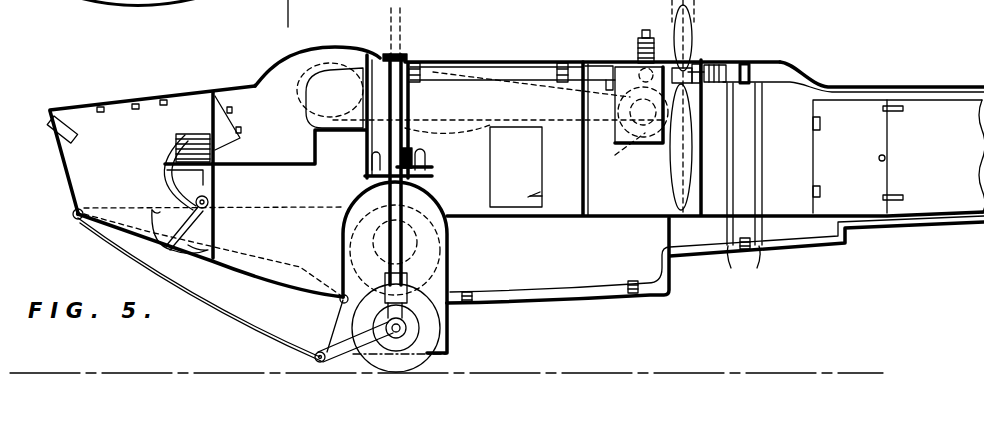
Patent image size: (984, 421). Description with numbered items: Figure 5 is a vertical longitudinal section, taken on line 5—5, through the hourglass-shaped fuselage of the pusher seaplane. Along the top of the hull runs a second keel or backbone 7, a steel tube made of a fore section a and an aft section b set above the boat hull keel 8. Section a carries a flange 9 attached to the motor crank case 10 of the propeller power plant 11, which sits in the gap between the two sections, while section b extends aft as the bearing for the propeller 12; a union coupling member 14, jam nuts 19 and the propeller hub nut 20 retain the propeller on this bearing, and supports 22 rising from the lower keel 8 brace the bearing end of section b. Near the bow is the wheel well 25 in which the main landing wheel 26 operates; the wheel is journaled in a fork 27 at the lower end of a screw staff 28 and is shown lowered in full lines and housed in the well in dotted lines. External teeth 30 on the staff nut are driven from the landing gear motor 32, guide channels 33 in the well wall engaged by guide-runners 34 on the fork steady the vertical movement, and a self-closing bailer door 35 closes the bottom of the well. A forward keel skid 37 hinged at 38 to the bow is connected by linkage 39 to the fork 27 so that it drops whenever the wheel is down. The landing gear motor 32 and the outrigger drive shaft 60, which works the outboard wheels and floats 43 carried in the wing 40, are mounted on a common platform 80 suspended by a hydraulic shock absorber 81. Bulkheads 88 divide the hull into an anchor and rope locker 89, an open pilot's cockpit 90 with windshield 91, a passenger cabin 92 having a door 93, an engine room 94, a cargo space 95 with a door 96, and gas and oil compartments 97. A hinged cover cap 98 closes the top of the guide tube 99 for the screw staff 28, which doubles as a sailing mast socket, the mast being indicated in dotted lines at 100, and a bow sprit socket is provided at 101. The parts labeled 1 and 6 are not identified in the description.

The box indicator 1 is at (519, 193).
The bottom plate 5 is at (527, 291).
The support column 6 is at (285, 22).
The backbone 7 is at (498, 73).
The boat hull keel 8 is at (628, 296).
The flange 9 is at (612, 80).
The motor crank case 10 is at (626, 89).
The propeller power plant 11 is at (641, 47).
The propeller 12 is at (680, 28).
The union coupling member 14 is at (708, 68).
The jam nuts 19 is at (727, 83).
The propeller hub nut 20 is at (692, 62).
The supports 22 is at (744, 186).
The wheel well 25 is at (203, 0).
The main landing wheel 26 is at (145, 3).
The fork 27 is at (336, 302).
The screw staff 28 is at (420, 203).
The external teeth 30 is at (390, 172).
The landing gear motor 32 is at (404, 150).
The guide channels 33 is at (405, 252).
The guide-runners 34 is at (410, 285).
The bailer door 35 is at (448, 337).
The forward keel skid 37 is at (250, 330).
The hinge 38 is at (73, 219).
The linkage 39 is at (105, 4).
The sustaining wing 40 is at (470, 61).
The outboard landing gear wheels and floats 43 is at (617, 152).
The drive shaft 60 is at (376, 161).
The platform 80 is at (425, 172).
The hydraulic shock absorber 81 is at (425, 162).
The bulkheads 88 is at (216, 224).
The anchor and rope locker 89 is at (152, 149).
The pilot's cockpit 90 is at (310, 95).
The windshield 91 is at (270, 66).
The passenger cabin 92 is at (521, 167).
The door 93 is at (531, 197).
The engine room 94 is at (604, 138).
The cargo space 95 is at (882, 137).
The door 96 is at (887, 131).
The gas and oil compartments 97 is at (715, 236).
The cover cap 98 is at (388, 53).
The guide tube 99 is at (405, 106).
The dotted line structure 100 is at (405, 33).
The bow sprit socket 101 is at (68, 110).
The fore section a is at (515, 78).
The aft section b is at (788, 83).